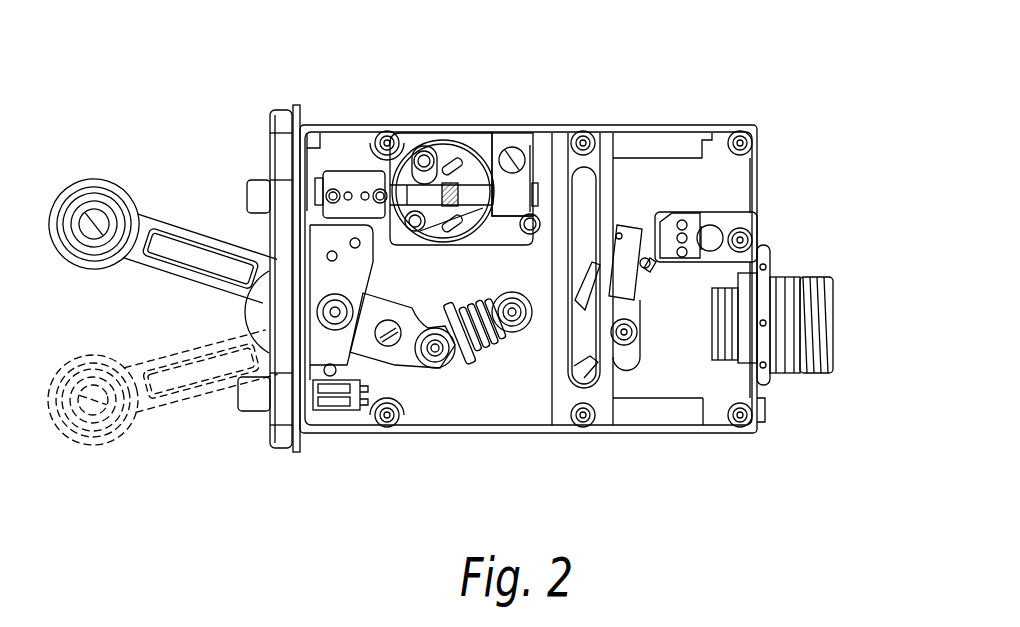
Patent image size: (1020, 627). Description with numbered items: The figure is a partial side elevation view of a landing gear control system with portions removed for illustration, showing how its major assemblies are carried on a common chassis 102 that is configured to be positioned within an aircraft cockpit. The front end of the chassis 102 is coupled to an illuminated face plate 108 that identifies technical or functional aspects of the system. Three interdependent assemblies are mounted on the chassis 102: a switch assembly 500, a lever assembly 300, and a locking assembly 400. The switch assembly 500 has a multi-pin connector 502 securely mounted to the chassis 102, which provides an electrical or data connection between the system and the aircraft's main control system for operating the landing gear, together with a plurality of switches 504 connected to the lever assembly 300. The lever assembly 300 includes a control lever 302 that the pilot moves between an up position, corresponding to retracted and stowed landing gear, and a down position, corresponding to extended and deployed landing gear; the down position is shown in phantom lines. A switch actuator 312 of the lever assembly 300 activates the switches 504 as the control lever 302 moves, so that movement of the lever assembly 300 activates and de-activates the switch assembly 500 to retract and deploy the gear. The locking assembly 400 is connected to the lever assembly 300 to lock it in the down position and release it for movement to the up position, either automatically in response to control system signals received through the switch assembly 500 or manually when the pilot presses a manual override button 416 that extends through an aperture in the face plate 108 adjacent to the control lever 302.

The chassis 102 is at (590, 125).
The illuminated face plate 108 is at (270, 132).
The manual override button 416 is at (250, 192).
The control lever 302 is at (137, 268).
The locking assembly 400 is at (432, 114).
The lever assembly 300 is at (437, 372).
The switch actuator 312 is at (487, 355).
The switch assembly 500 is at (808, 167).
The switches 504 is at (655, 272).
The multi-pin connector 502 is at (833, 310).